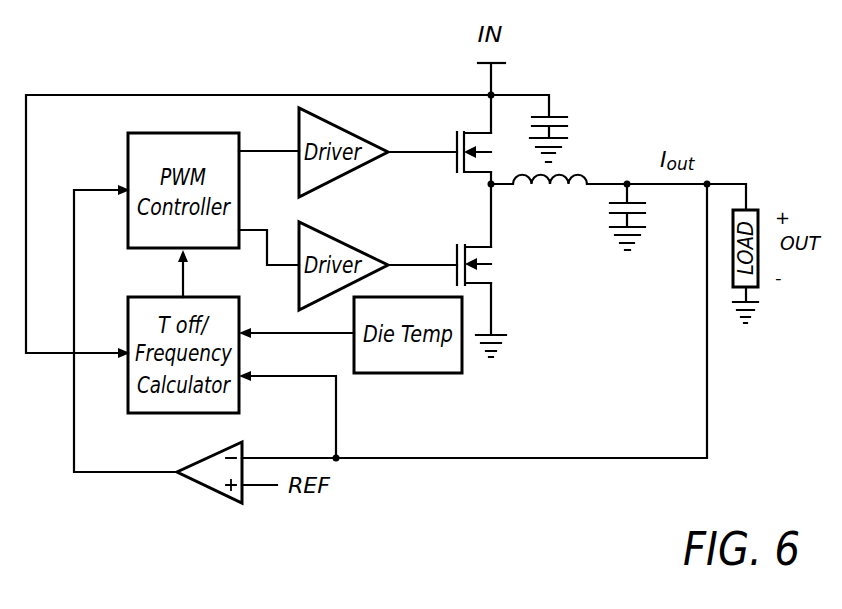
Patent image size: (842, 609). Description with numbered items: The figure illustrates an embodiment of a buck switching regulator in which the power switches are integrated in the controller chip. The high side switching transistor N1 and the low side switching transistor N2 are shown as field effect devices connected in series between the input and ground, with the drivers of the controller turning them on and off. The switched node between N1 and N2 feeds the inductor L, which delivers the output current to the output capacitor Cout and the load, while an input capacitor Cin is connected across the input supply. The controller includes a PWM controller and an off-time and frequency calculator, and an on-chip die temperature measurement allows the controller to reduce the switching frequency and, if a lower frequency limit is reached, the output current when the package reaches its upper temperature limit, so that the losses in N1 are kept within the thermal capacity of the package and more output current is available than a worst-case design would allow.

The high side switching transistor N1 is at (489, 152).
The low side switching transistor N2 is at (490, 265).
The input capacitor Cin is at (554, 128).
The inductor L is at (539, 198).
The output capacitor Cout is at (655, 217).